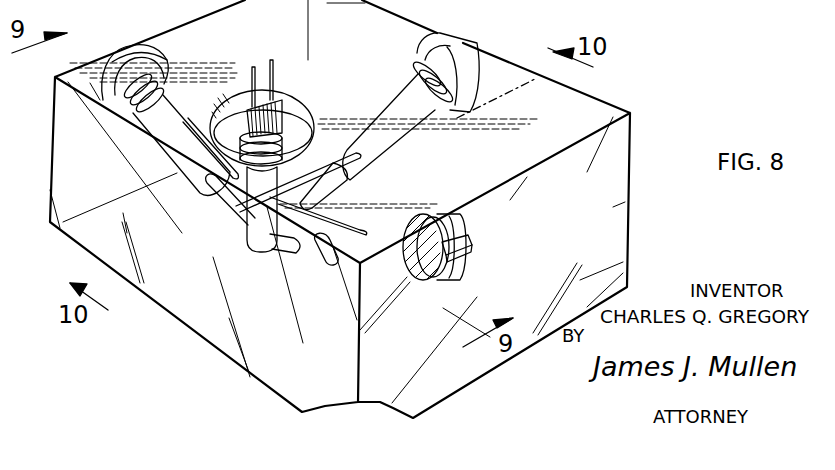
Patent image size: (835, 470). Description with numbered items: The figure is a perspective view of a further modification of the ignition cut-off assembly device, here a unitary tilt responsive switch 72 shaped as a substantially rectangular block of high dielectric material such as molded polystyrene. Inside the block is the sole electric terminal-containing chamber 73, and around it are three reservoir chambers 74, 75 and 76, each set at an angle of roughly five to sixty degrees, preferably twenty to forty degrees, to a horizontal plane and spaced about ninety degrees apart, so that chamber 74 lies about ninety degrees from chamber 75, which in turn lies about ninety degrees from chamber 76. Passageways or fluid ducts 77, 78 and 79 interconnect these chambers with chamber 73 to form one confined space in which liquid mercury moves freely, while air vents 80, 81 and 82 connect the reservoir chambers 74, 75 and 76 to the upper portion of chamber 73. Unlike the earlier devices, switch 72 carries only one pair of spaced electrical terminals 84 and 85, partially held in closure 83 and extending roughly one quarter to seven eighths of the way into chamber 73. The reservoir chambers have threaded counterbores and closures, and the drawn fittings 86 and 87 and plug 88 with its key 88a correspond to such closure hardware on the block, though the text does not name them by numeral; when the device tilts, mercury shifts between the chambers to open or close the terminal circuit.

The tilt responsive switch 72 is at (634, 228).
The electric terminal-containing chamber 73 is at (256, 213).
The reservoir chamber 74 is at (165, 125).
The reservoir chamber 75 is at (382, 147).
The reservoir chamber 76 is at (330, 260).
The fluid duct 77 is at (222, 208).
The fluid duct 78 is at (322, 190).
The fluid duct 79 is at (300, 243).
The air vent 80 is at (196, 132).
The air vent 81 is at (320, 160).
The air vent 82 is at (343, 223).
The closure 83 is at (281, 132).
The electrical terminal 84 is at (274, 67).
The electrical terminal 85 is at (253, 68).
The threaded fitting 86 is at (413, 78).
The threaded fitting 87 is at (158, 98).
The plug 88 is at (418, 268).
The plug key 88a is at (465, 262).